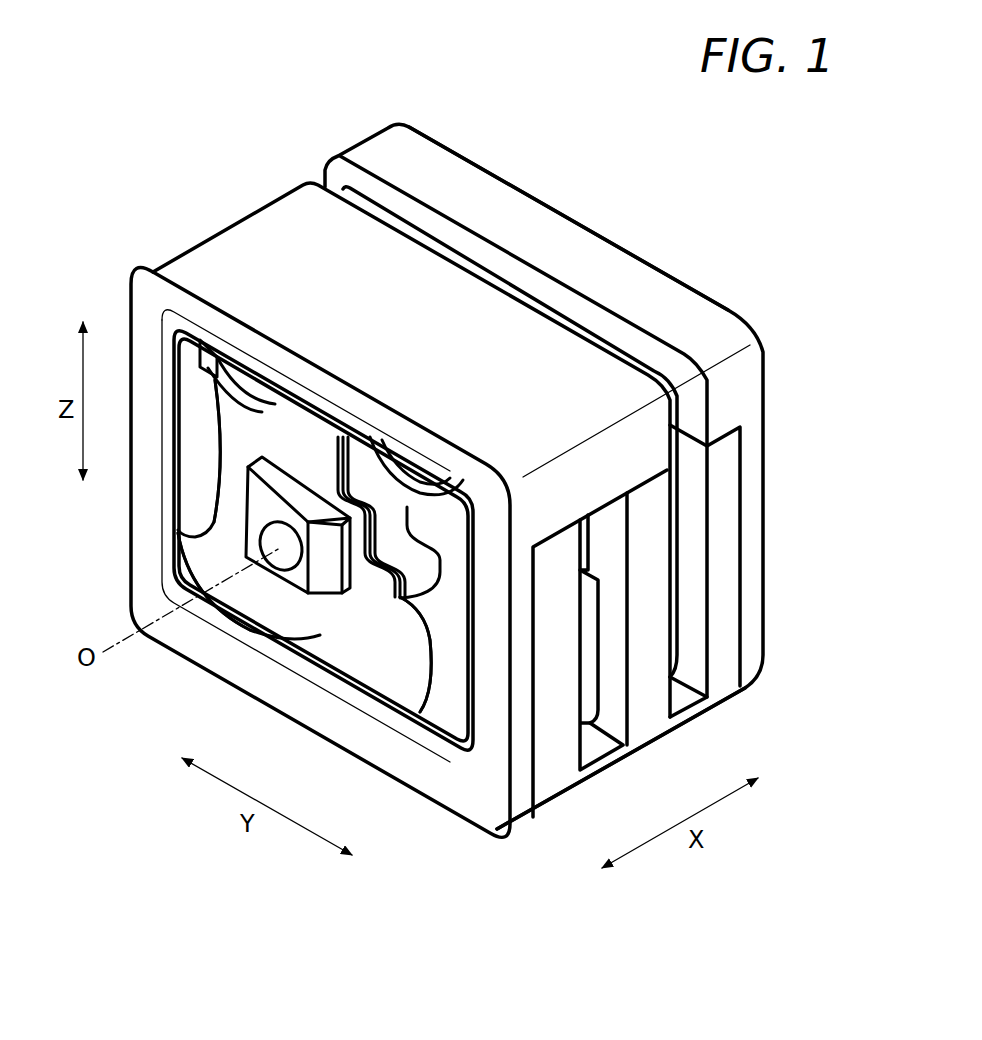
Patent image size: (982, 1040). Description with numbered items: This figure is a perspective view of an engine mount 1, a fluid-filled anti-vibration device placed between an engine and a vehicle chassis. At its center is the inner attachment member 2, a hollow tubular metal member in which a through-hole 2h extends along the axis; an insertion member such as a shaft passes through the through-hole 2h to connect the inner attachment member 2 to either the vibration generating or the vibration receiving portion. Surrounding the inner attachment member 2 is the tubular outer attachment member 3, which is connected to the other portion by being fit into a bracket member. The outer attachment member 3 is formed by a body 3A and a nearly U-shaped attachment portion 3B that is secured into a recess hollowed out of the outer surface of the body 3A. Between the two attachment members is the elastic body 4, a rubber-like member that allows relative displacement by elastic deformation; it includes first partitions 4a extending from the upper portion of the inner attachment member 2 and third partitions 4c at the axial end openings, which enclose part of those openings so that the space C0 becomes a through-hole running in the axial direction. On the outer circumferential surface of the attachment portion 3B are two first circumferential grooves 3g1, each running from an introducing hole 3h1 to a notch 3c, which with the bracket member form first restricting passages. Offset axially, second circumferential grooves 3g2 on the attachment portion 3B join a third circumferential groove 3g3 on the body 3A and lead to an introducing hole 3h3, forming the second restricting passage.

The engine mount 1 is at (283, 128).
The inner attachment member 2 is at (293, 490).
The through-hole 2h is at (274, 541).
The outer attachment member 3 is at (232, 217).
The body 3A is at (491, 194).
The attachment portion 3B is at (724, 683).
The notch 3c is at (584, 544).
The first circumferential groove 3g1 is at (607, 670).
The second circumferential groove 3g2 is at (689, 500).
The third circumferential groove 3g3 is at (559, 293).
The introducing hole 3h1 is at (586, 739).
The introducing hole 3h3 is at (676, 680).
The elastic body 4 is at (378, 630).
The first partition 4a is at (243, 392).
The third partition 4c is at (200, 520).
The space C0 is at (310, 405).